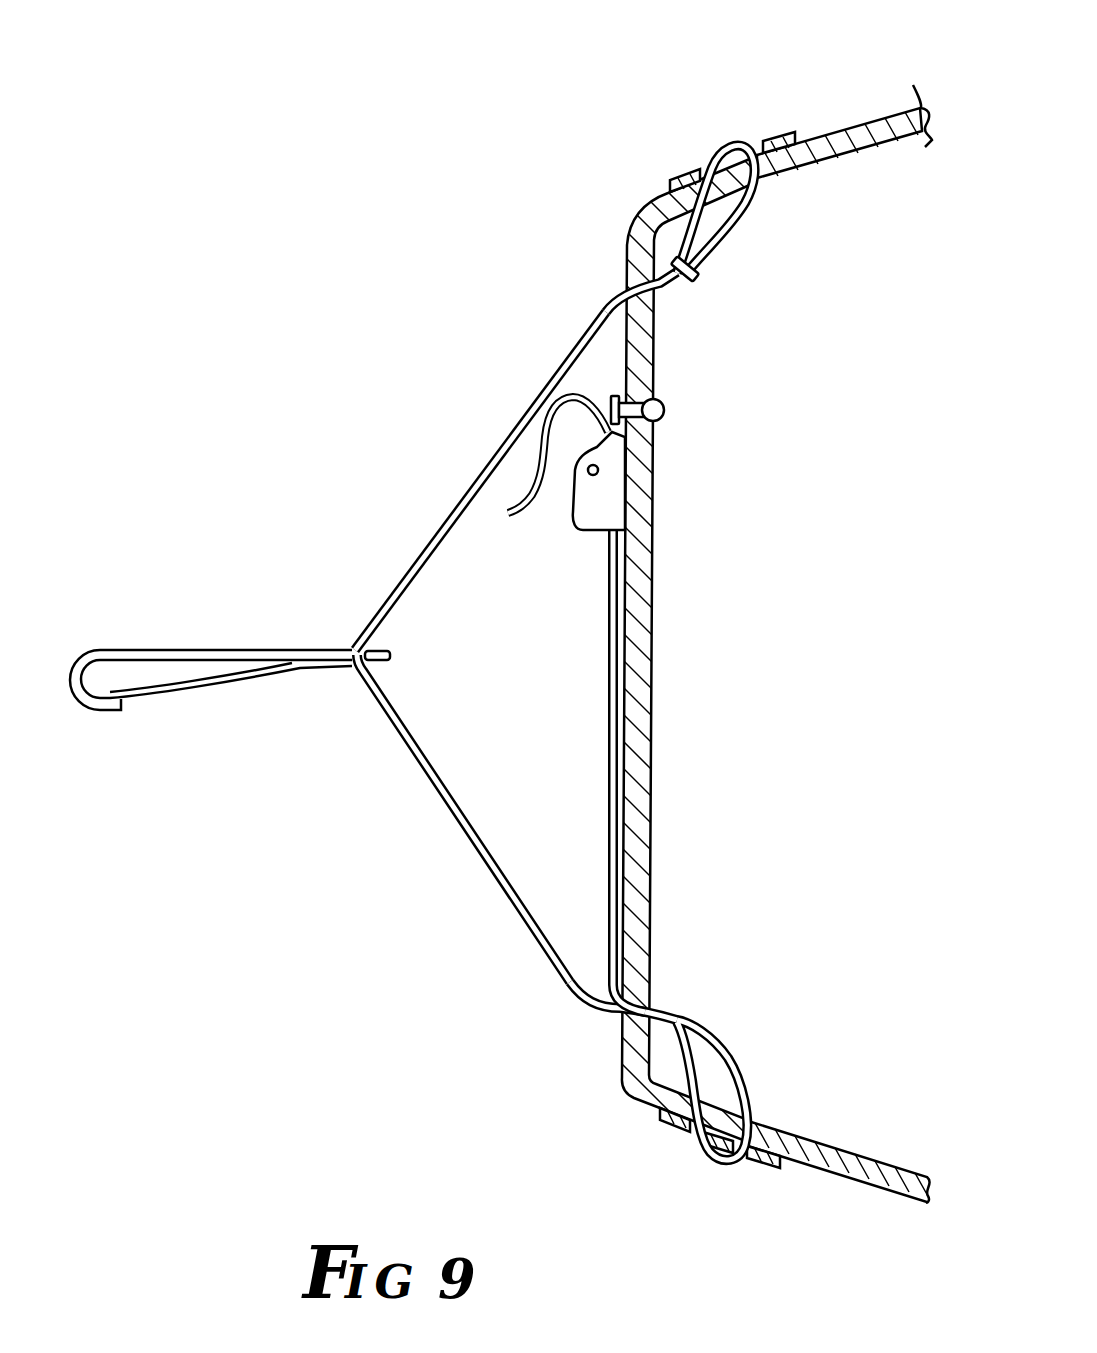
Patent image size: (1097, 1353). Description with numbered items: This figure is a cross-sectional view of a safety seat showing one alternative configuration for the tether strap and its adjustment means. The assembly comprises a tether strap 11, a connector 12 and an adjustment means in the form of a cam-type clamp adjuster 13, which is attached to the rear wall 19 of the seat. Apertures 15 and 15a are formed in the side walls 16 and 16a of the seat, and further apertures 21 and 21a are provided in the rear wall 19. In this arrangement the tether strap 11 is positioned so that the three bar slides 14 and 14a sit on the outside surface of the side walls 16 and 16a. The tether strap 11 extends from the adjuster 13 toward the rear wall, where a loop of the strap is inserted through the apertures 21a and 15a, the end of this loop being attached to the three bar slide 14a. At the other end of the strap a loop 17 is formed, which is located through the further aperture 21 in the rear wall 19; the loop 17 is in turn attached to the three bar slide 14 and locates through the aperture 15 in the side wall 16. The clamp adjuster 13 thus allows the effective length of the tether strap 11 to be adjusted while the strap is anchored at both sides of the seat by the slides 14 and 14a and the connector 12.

The tether strap 11 is at (493, 858).
The connector 12 is at (187, 646).
The cam-type clamp adjuster 13 is at (587, 518).
The three bar slide 14 is at (688, 182).
The three bar slide 14a is at (763, 1167).
The aperture 15 is at (768, 208).
The aperture 15a is at (766, 1092).
The side wall 16 is at (840, 133).
The side wall 16a is at (828, 1167).
The loop 17 is at (748, 200).
The rear wall 19 is at (651, 622).
The aperture 21 is at (676, 308).
The aperture 21a is at (674, 986).